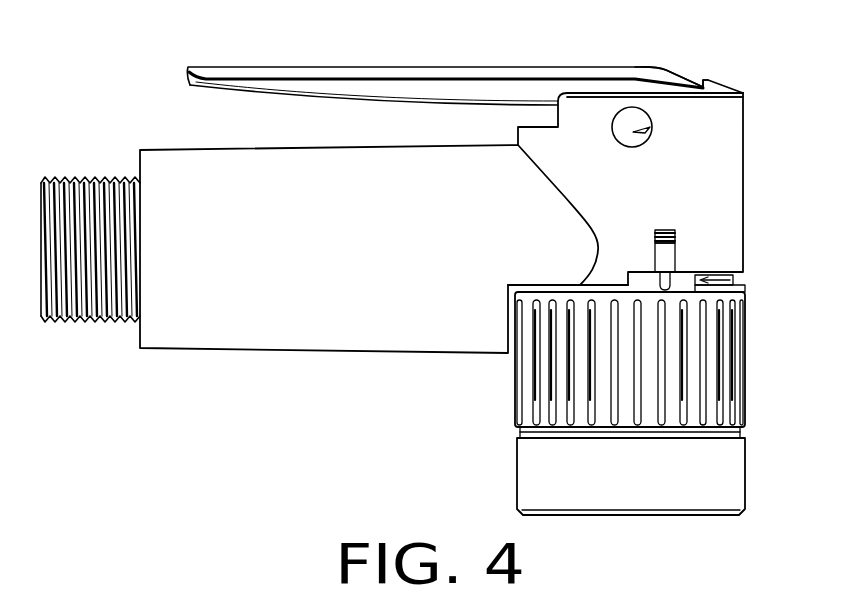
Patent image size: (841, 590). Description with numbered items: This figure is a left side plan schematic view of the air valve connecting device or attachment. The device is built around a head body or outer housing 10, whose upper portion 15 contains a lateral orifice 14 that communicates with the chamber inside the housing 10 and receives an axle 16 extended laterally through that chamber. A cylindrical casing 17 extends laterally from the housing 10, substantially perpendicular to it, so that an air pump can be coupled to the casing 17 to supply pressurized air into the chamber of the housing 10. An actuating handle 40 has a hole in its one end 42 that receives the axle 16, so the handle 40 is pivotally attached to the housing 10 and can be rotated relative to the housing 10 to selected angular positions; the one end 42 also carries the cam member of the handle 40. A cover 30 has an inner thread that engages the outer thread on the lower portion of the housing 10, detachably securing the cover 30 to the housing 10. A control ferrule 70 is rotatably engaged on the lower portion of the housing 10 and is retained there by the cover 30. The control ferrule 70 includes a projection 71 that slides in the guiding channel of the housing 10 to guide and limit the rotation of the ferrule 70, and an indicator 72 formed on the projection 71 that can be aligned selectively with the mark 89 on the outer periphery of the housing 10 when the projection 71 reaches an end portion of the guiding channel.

The head body or outer housing 10 is at (712, 187).
The lateral orifice 14 is at (648, 130).
The upper portion 15 is at (727, 105).
The axle 16 is at (627, 117).
The cylindrical casing 17 is at (190, 327).
The cover 30 is at (690, 478).
The actuating handle 40 is at (355, 88).
The one end 42 is at (650, 70).
The control ferrule 70 is at (687, 370).
The projection 71 is at (645, 283).
The indicator 72 is at (672, 284).
The mark 89 is at (677, 253).